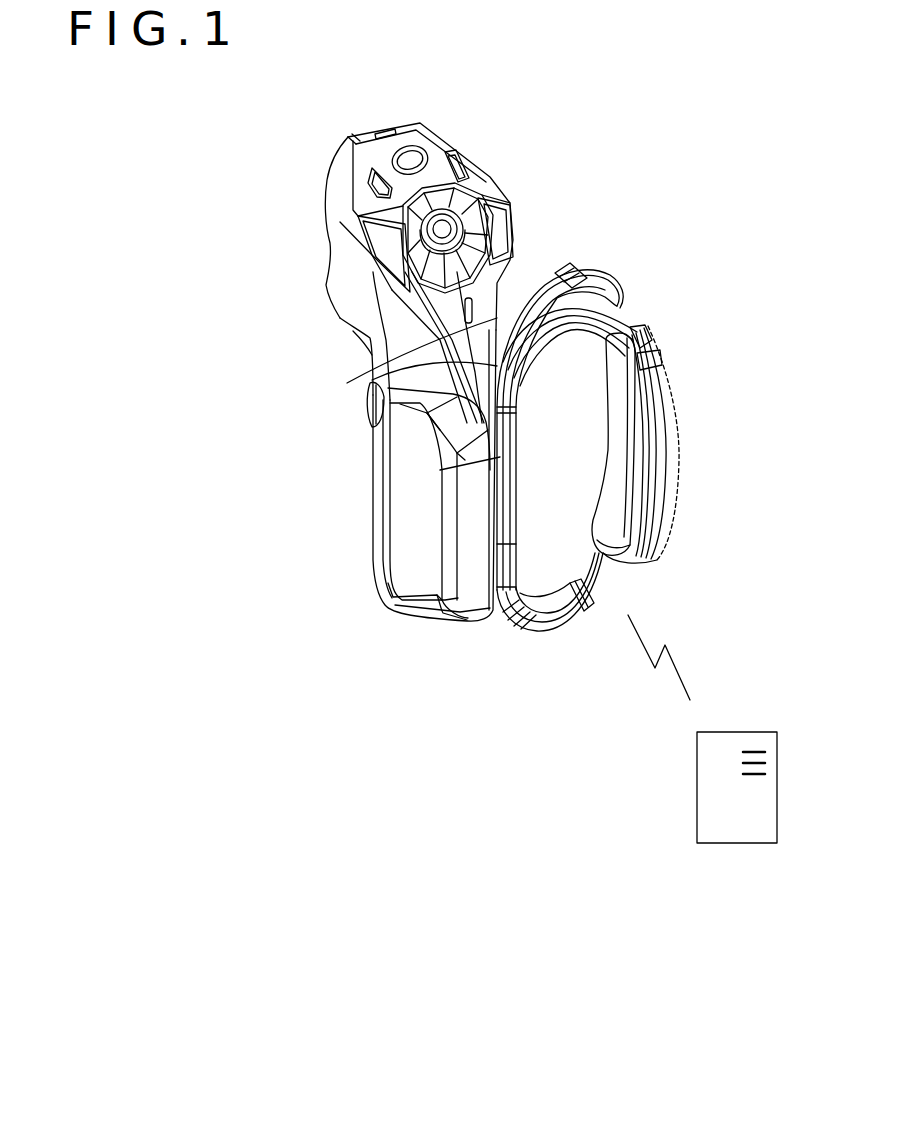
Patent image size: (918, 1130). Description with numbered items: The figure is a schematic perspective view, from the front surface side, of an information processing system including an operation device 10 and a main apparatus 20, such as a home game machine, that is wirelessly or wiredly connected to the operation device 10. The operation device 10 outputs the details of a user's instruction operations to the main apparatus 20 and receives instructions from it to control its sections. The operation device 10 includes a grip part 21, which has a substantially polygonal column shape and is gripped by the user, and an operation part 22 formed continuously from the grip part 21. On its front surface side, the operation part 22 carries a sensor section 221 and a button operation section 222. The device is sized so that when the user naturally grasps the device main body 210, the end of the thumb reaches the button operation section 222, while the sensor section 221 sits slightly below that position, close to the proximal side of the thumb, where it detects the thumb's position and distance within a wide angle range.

The operation device 10 is at (228, 745).
The main apparatus 20 is at (755, 843).
The grip part 21 is at (365, 441).
The operation part 22 is at (550, 246).
The device main body 210 is at (336, 323).
The sensor section 221 is at (375, 378).
The button operation section 222 is at (430, 92).